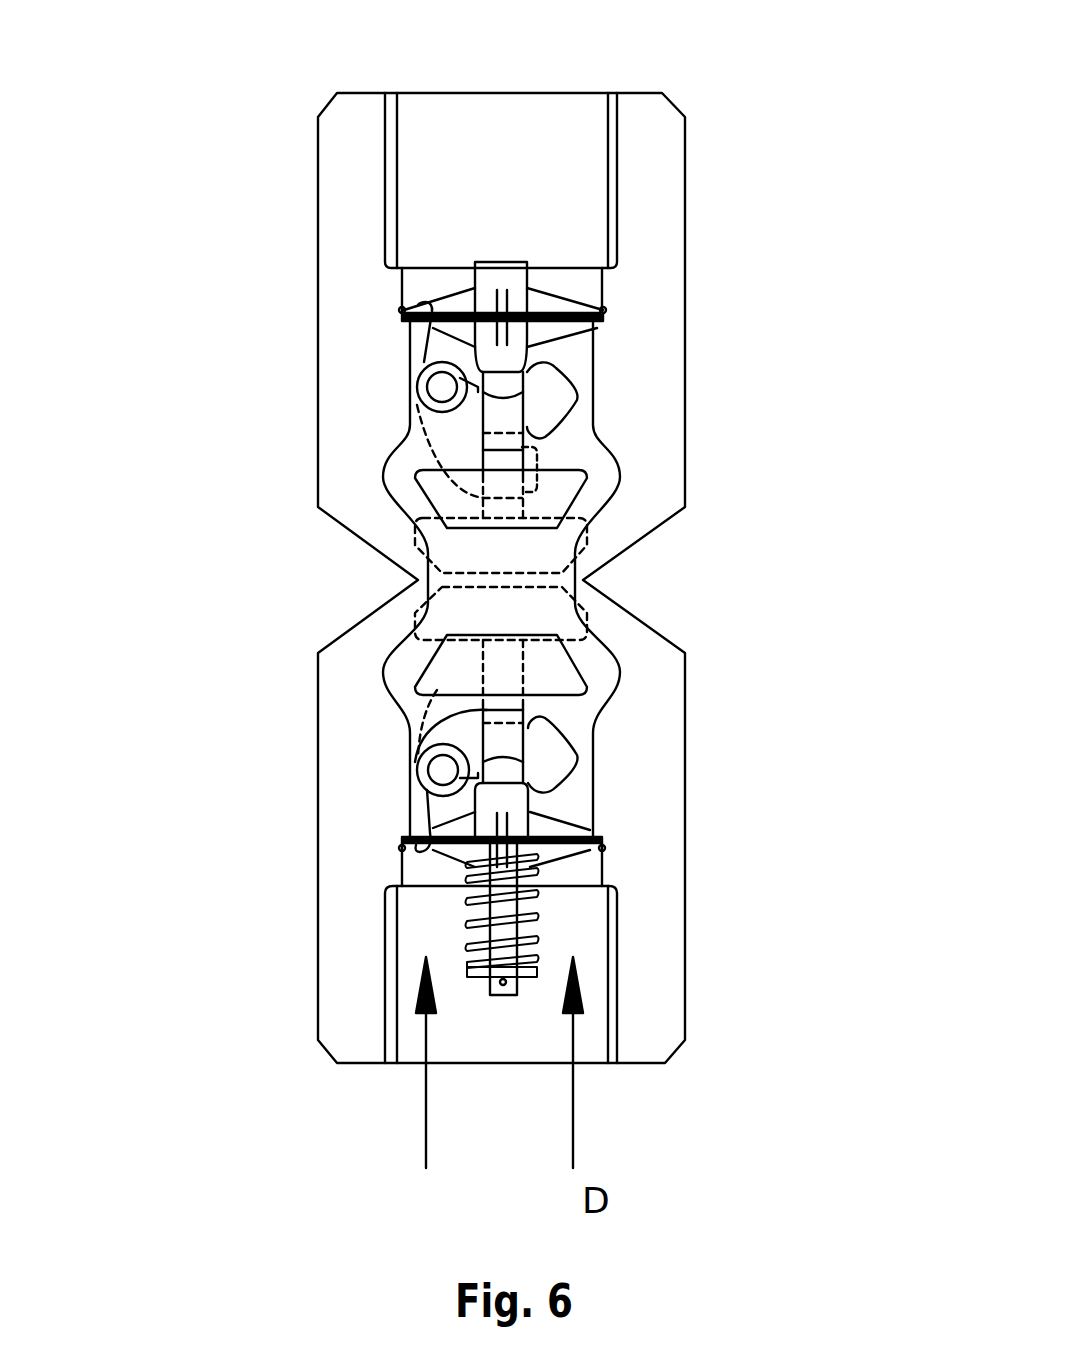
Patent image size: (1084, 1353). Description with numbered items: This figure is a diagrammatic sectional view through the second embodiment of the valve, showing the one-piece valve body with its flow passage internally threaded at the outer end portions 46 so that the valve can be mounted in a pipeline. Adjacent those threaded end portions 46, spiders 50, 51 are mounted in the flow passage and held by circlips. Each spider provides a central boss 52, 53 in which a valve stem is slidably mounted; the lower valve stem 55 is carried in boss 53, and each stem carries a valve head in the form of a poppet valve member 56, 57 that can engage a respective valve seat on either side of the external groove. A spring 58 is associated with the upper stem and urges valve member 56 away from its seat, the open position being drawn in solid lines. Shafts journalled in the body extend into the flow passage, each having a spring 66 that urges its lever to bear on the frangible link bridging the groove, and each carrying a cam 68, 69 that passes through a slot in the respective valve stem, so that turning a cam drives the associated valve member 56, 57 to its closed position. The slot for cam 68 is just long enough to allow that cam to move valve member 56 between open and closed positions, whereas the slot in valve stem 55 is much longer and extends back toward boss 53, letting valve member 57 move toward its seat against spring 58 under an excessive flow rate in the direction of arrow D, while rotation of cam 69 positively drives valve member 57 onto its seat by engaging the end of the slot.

The outer end portions 46 is at (617, 130).
The central boss 52 is at (495, 272).
The spider 50 is at (545, 303).
The spring 66 is at (422, 345).
The cam 68 is at (547, 393).
The poppet valve member 56 is at (567, 483).
The poppet valve member 57 is at (563, 657).
The cam 69 is at (550, 750).
The central boss 53 is at (520, 798).
The spider 51 is at (550, 847).
The valve stem 55 is at (507, 928).
The spring 58 is at (537, 940).